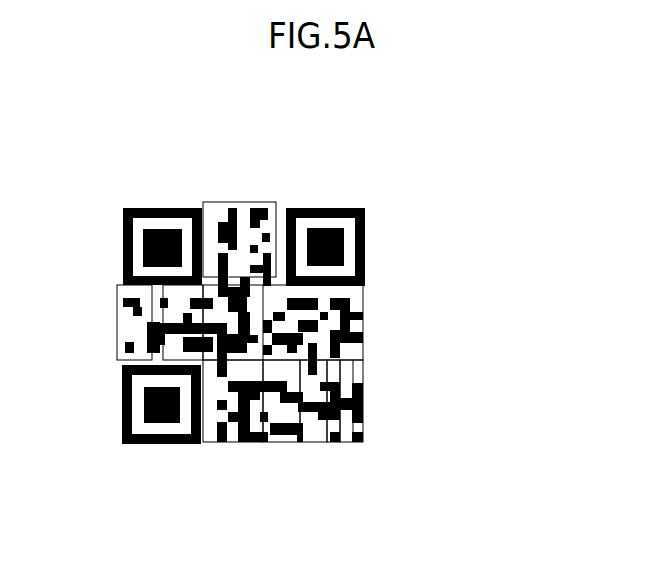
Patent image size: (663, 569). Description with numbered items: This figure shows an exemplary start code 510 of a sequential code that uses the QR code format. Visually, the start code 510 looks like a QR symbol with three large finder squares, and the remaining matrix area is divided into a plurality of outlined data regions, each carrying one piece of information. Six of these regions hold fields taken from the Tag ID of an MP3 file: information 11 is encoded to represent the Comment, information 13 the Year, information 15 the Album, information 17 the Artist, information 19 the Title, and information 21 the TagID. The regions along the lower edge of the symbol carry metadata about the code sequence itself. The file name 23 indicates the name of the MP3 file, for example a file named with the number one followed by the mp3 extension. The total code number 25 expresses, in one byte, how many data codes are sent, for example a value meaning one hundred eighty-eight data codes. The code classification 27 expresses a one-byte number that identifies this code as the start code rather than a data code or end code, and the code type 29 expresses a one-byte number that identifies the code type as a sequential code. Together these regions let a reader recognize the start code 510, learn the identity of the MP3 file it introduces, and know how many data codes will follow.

The start code 510 is at (457, 137).
The comment information 11 is at (247, 207).
The year information 13 is at (120, 313).
The album information 15 is at (172, 313).
The artist information 17 is at (358, 326).
The title information 19 is at (218, 438).
The TagID information 21 is at (282, 435).
The file name 23 is at (313, 438).
The total code number 25 is at (335, 442).
The code classification 27 is at (345, 440).
The code type 29 is at (365, 403).